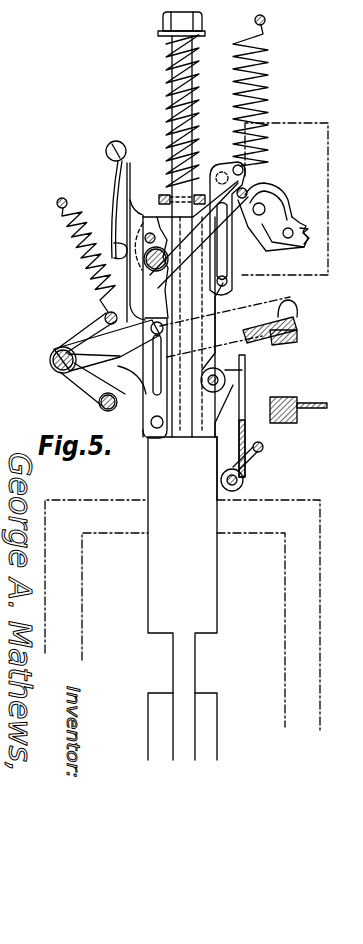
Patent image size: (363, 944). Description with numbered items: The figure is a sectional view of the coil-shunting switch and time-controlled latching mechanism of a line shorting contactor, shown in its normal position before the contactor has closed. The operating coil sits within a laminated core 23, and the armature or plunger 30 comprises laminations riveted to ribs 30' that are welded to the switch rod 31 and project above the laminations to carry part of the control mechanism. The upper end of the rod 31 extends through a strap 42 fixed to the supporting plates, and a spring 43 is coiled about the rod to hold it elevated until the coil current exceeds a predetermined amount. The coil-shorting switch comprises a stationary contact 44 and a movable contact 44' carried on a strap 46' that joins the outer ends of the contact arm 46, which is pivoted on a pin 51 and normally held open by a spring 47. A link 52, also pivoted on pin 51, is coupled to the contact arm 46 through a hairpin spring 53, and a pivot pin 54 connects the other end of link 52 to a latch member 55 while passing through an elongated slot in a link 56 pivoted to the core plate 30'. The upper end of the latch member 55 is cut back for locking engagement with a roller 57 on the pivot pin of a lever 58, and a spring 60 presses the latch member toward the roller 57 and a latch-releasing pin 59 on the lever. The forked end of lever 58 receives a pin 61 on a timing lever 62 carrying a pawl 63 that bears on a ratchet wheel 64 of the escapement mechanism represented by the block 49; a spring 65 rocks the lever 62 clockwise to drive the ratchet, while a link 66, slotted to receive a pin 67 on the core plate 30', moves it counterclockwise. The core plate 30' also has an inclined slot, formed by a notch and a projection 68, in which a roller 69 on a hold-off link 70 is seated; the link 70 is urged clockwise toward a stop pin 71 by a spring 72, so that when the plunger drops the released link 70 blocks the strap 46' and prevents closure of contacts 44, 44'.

The laminated core 23 is at (86, 497).
The plunger 30 is at (164, 598).
The ribs 30' is at (166, 305).
The switch rod 31 is at (172, 112).
The strap 42 is at (164, 195).
The spring 43 is at (170, 71).
The stationary contact 44 is at (298, 398).
The movable switch contact 44' is at (289, 331).
The contact arm 46 is at (232, 316).
The strap 46' is at (303, 303).
The spring 47 is at (74, 254).
The time-delay mechanism 49 is at (328, 123).
The pivot pin 51 is at (50, 359).
The link 52 is at (98, 332).
The hairpin spring 53 is at (92, 382).
The pivot pin 54 is at (153, 331).
The latch member 55 is at (127, 230).
The link 56 is at (146, 394).
The roller 57 is at (159, 273).
The lever 58 is at (220, 222).
The latch-releasing pin 59 is at (151, 232).
The spring 60 is at (127, 197).
The pin 61 is at (246, 190).
The timing lever 62 is at (287, 223).
The pawl 63 is at (275, 240).
The ratchet wheel 64 is at (280, 198).
The spring 65 is at (258, 88).
The link 66 is at (232, 261).
The pin 67 is at (228, 282).
The projection 68 is at (230, 387).
The roller 69 is at (226, 377).
The hold-off link 70 is at (220, 452).
The stop pin 71 is at (263, 446).
The spring 72 is at (257, 454).